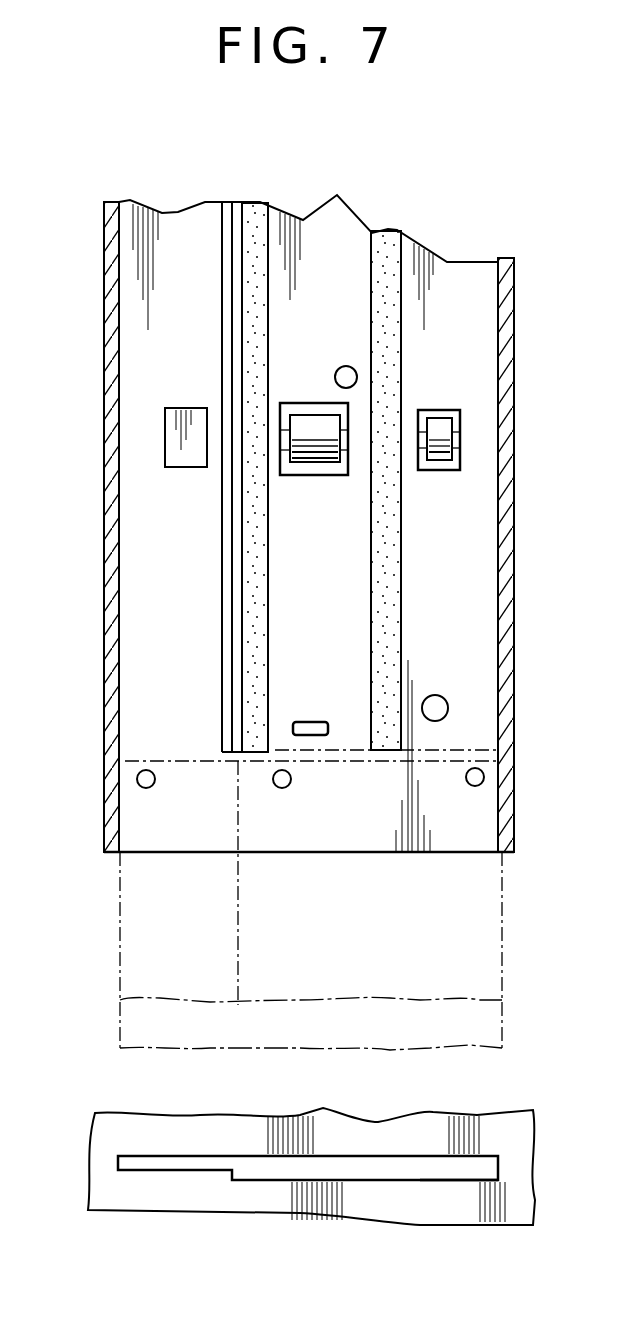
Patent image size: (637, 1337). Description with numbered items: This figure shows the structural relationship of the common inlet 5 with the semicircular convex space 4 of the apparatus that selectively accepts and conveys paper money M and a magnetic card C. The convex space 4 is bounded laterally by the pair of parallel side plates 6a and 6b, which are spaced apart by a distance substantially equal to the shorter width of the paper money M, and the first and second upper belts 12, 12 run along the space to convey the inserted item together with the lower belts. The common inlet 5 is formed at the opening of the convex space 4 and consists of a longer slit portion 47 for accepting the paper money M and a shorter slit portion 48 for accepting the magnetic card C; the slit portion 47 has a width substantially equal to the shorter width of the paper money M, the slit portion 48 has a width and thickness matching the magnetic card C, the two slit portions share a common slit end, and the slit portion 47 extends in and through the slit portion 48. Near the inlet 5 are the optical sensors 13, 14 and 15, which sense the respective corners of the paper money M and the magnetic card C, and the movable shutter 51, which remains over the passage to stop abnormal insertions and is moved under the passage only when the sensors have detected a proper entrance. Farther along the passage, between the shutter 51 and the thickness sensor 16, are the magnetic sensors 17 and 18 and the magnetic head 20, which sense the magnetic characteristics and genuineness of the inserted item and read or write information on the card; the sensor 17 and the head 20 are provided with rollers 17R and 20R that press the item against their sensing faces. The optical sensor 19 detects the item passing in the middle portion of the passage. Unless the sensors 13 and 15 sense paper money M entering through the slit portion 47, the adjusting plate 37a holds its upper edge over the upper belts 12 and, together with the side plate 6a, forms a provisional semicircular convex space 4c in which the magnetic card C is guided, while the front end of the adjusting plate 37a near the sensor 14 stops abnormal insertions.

The semicircular convex space 4 is at (192, 292).
The provisional semicircular convex space 4c is at (325, 237).
The common inlet 5 is at (375, 832).
The side plate 6a is at (514, 563).
The side plate 6b is at (110, 568).
The upper belt 12 is at (253, 602).
The sensor 13 is at (477, 786).
The sensor 14 is at (283, 788).
The sensor 15 is at (148, 788).
The optical sensor 16 is at (448, 708).
The magnetic sensor 17 is at (442, 472).
The roller 17R is at (437, 423).
The magnetic sensor 18 is at (185, 458).
The optical sensor 19 is at (350, 366).
The magnetic head 20 is at (317, 478).
The roller 20R is at (313, 423).
The adjusting plate 37a is at (222, 622).
The longer slit portion 47 is at (195, 1155).
The shorter slit portion 48 is at (457, 1182).
The movable shutter 51 is at (312, 720).
The paper money M is at (145, 1020).
The magnetic card C is at (433, 946).